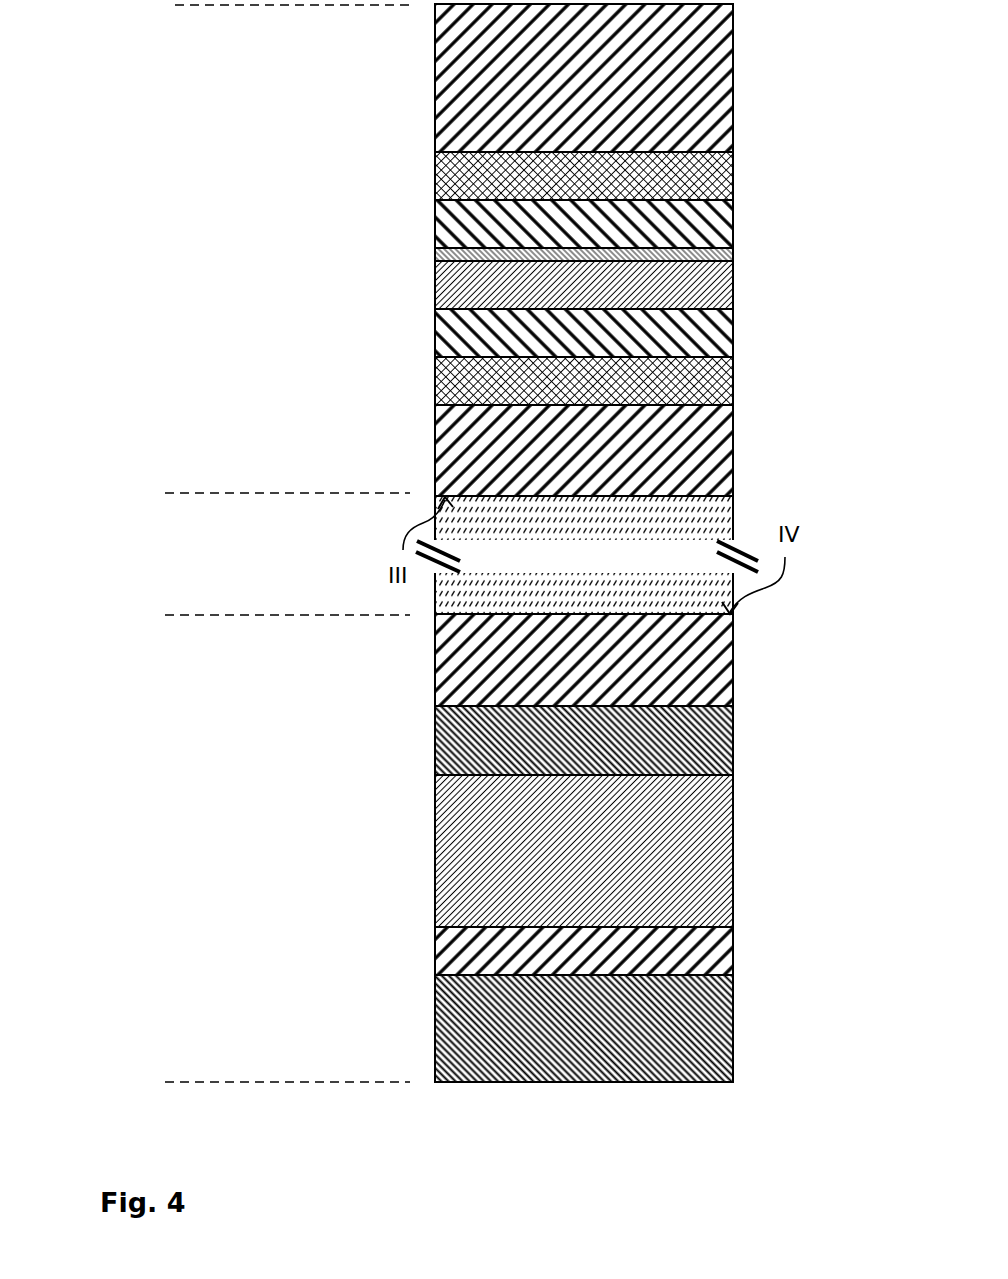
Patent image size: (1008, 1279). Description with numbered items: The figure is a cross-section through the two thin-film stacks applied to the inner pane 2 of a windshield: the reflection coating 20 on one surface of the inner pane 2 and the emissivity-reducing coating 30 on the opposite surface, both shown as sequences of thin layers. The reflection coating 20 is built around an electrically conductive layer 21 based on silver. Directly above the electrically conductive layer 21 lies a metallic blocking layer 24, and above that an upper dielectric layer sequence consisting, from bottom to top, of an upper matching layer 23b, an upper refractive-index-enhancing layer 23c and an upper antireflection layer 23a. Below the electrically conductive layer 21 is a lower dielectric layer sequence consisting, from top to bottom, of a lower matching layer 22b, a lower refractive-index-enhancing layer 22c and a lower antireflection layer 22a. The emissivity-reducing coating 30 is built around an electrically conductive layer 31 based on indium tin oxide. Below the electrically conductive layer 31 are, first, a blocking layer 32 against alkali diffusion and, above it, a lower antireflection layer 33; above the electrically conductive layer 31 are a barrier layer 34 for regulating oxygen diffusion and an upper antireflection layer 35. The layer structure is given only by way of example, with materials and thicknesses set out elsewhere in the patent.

The inner pane 2 is at (707, 520).
The reflection coating 20 is at (109, 10).
The electrically conductive layer 21 is at (465, 283).
The lower antireflection layer 22a is at (718, 436).
The lower matching layer 22b is at (718, 343).
The lower refractive-index-enhancing layer 22c is at (462, 386).
The upper antireflection layer 23a is at (715, 95).
The upper matching layer 23b is at (718, 221).
The upper refractive-index-enhancing layer 23c is at (462, 175).
The metallic blocking layer 24 is at (718, 257).
The emissivity-reducing coating 30 is at (109, 615).
The electrically conductive layer 31 is at (722, 848).
The blocking layer against alkali diffusion 32 is at (718, 661).
The lower antireflection layer 33 is at (722, 737).
The barrier layer 34 is at (722, 942).
The upper antireflection layer 35 is at (722, 1018).